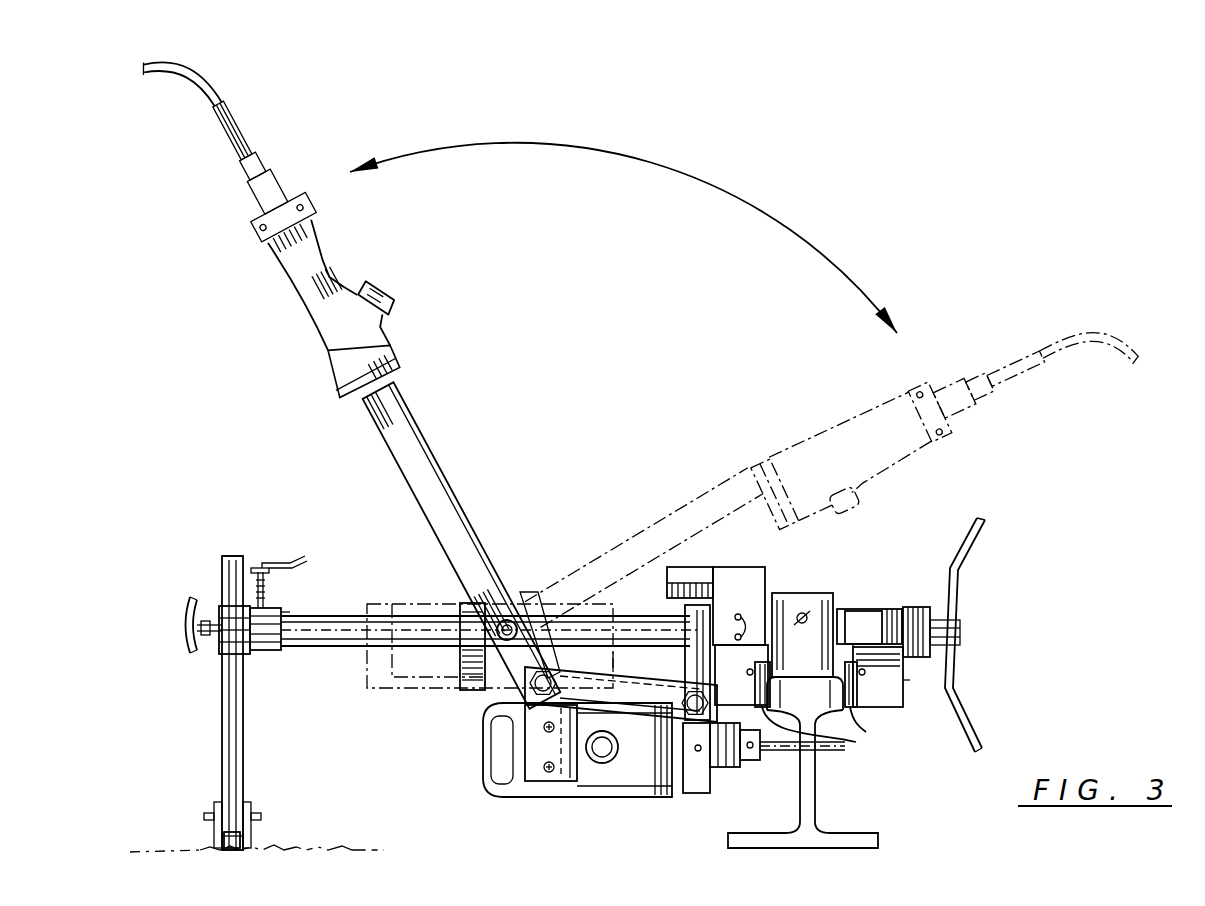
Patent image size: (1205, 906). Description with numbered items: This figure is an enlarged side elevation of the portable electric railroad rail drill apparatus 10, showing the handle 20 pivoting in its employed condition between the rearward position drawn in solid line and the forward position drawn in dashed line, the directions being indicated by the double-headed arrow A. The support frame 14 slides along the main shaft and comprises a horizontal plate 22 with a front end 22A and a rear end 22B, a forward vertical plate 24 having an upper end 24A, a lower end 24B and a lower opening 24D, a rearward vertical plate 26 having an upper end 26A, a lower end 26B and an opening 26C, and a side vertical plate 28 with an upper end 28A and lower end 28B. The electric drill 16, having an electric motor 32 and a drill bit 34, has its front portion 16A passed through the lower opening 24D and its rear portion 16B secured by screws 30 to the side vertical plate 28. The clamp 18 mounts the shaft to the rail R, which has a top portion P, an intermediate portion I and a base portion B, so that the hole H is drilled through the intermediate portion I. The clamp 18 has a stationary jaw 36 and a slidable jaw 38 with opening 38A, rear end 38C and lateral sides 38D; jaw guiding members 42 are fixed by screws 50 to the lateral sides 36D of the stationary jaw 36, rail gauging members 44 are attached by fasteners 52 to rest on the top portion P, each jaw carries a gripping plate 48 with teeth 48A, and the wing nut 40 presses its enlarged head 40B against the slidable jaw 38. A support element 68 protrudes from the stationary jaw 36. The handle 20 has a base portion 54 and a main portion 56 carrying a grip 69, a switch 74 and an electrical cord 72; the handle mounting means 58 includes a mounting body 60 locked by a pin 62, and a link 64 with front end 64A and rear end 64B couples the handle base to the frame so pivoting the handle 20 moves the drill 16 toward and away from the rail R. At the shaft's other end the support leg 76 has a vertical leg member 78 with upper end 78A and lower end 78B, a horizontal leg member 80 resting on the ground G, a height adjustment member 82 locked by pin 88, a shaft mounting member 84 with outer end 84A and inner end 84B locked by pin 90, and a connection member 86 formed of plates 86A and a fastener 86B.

The portable electric railroad rail drill apparatus 10 is at (1036, 516).
The support frame 14 is at (490, 635).
The electric drill 16 is at (647, 780).
The front portion of the electric drill 16A is at (735, 768).
The rear portion of the electric drill 16B is at (490, 748).
The clamp 18 is at (812, 625).
The handle 20 is at (653, 374).
The horizontal plate 22 is at (521, 690).
The front end of the horizontal plate 22A is at (614, 661).
The rear end of the horizontal plate 22B is at (471, 681).
The forward vertical plate 24 is at (741, 673).
The upper end of the forward vertical plate 24A is at (679, 606).
The lower end of the forward vertical plate 24B is at (712, 770).
The lower opening of the forward vertical plate 24D is at (695, 800).
The rearward vertical plate 26 is at (458, 612).
The upper end of the rearward vertical plate 26A is at (462, 603).
The lower end of the rearward vertical plate 26B is at (452, 688).
The opening of the rearward vertical plate 26C is at (466, 600).
The side vertical plate 28 is at (558, 781).
The upper end of the side vertical plate 28A is at (580, 790).
The lower end of the side vertical plate 28B is at (562, 786).
The screws 30 is at (545, 747).
The electric motor 32 is at (611, 800).
The drill bit 34 is at (826, 752).
The stationary jaw 36 is at (762, 698).
The lateral sides of the stationary jaw 36D is at (856, 743).
The slidable jaw 38 is at (940, 627).
The opening of the slidable jaw 38A is at (849, 612).
The rear end of the slidable jaw 38C is at (905, 680).
The lateral sides of the slidable jaw 38D is at (900, 606).
The wing nut 40 is at (951, 631).
The enlarged head of the wing nut 40B is at (925, 607).
The jaw guiding members 42 is at (869, 626).
The rail gauging members 44 is at (805, 604).
The gripping plate 48 is at (835, 687).
The teeth 48A is at (848, 689).
The screws 50 is at (739, 606).
The fasteners 52 is at (805, 612).
The base portion of the handle 54 is at (498, 600).
The main portion of the handle 56 is at (374, 432).
The handle mounting means 58 is at (480, 632).
The mounting body 60 is at (548, 600).
The pin 62 is at (518, 616).
The link 64 is at (568, 701).
The front end of the link 64A is at (691, 642).
The rear end of the link 64B is at (522, 691).
The support element 68 is at (710, 572).
The grip 69 is at (320, 250).
The electrical cord 72 is at (208, 90).
The switch 74 is at (384, 302).
The support leg 76 is at (227, 678).
The vertical leg member 78 is at (244, 737).
The upper end of the vertical leg member 78A is at (232, 557).
The lower end of the vertical leg member 78B is at (226, 833).
The horizontal leg member 80 is at (215, 856).
The height adjustment member 82 is at (229, 609).
The shaft mounting member 84 is at (268, 620).
The outer end of the shaft mounting member 84A is at (232, 641).
The inner end of the shaft mounting member 84B is at (272, 650).
The connection member 86 is at (236, 800).
The plates 86A is at (217, 829).
The fastener 86B is at (216, 814).
The pin 88 is at (186, 623).
The pin 90 is at (263, 572).
The double-headed arrow A is at (722, 190).
The top portion of the rail P is at (797, 702).
The hole H is at (806, 772).
The intermediate portion of the rail I is at (800, 796).
The rail R is at (834, 770).
The base portion of the rail B is at (860, 840).
The ground G is at (334, 851).